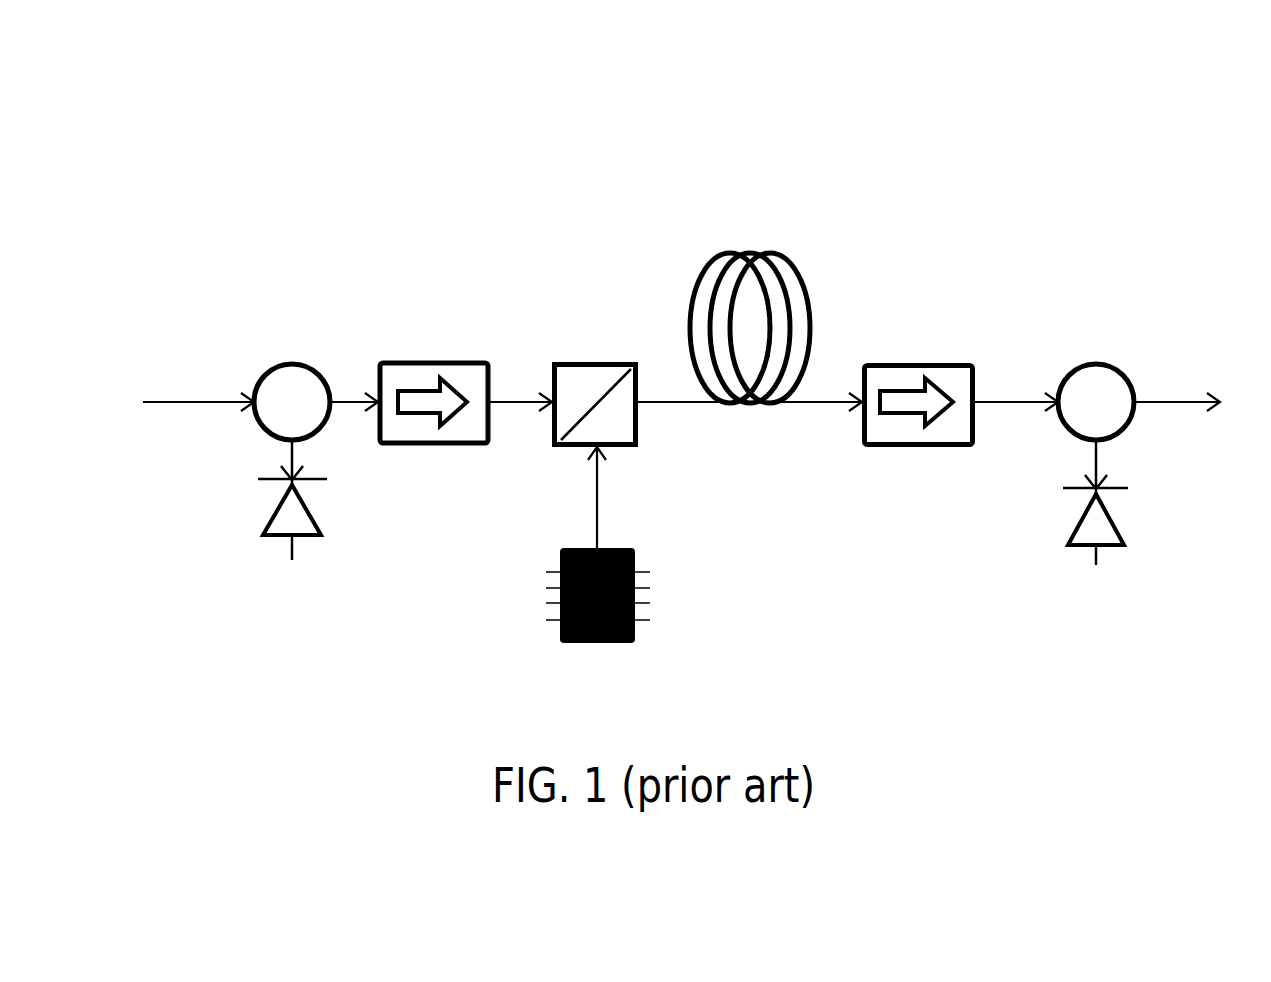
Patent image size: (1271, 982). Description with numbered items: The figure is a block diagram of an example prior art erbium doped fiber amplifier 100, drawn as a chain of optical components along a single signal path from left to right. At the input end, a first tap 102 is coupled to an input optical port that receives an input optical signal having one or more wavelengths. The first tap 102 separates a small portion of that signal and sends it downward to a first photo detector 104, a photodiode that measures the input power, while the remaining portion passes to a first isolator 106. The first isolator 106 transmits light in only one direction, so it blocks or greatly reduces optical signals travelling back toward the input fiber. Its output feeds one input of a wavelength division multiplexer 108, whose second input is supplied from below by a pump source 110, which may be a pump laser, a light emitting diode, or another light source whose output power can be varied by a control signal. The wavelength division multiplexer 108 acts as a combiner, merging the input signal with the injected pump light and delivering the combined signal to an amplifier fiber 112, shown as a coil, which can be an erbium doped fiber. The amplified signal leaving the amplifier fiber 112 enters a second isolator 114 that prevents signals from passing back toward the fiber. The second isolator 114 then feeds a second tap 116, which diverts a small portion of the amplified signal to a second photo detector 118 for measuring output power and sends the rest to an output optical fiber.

The erbium doped fiber amplifier 100 is at (145, 112).
The first tap 102 is at (256, 366).
The first photo detector 104 is at (258, 514).
The first isolator 106 is at (405, 355).
The wavelength division multiplexer 108 is at (545, 357).
The pump source 110 is at (555, 628).
The amplifier fiber 112 is at (755, 240).
The second isolator 114 is at (895, 450).
The second tap 116 is at (1135, 425).
The second photo detector 118 is at (1120, 548).